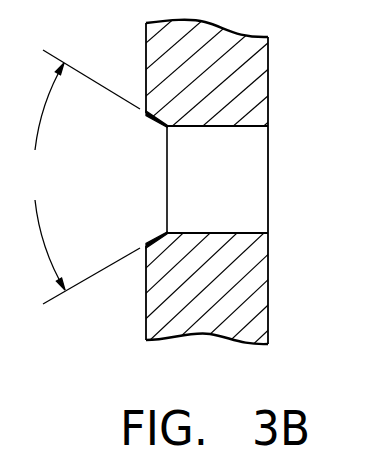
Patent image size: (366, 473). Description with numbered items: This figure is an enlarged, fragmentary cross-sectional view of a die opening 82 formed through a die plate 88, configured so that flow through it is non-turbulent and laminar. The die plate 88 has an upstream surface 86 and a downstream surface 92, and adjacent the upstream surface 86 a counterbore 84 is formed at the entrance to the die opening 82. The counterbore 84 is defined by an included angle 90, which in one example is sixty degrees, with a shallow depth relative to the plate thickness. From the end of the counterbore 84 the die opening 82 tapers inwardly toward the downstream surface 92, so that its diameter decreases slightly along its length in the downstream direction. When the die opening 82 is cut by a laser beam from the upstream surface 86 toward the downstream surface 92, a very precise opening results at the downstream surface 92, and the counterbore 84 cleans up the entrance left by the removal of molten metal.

The die opening 82 is at (208, 194).
The counterbore 84 is at (161, 236).
The upstream surface 86 is at (145, 310).
The die plate 88 is at (217, 38).
The included angle 90 is at (78, 177).
The downstream surface 92 is at (268, 291).